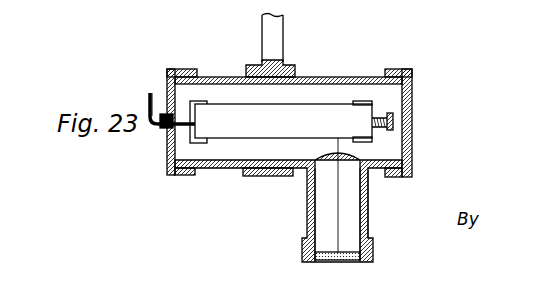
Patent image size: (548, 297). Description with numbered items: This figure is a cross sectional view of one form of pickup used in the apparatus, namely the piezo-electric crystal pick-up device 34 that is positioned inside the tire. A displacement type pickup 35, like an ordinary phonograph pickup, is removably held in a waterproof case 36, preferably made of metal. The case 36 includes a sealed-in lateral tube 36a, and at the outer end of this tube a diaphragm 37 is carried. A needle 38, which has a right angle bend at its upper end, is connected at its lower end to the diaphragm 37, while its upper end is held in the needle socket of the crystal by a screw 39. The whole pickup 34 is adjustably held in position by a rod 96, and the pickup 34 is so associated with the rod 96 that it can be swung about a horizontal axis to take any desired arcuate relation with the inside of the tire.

The piezo-electric crystal pick-up device 34 is at (328, 76).
The displacement type pickup 35 is at (332, 105).
The waterproof case 36 is at (228, 172).
The lateral tube 36a is at (368, 222).
The diaphragm 37 is at (330, 252).
The needle 38 is at (338, 196).
The screw 39 is at (393, 120).
The rod 96 is at (267, 43).